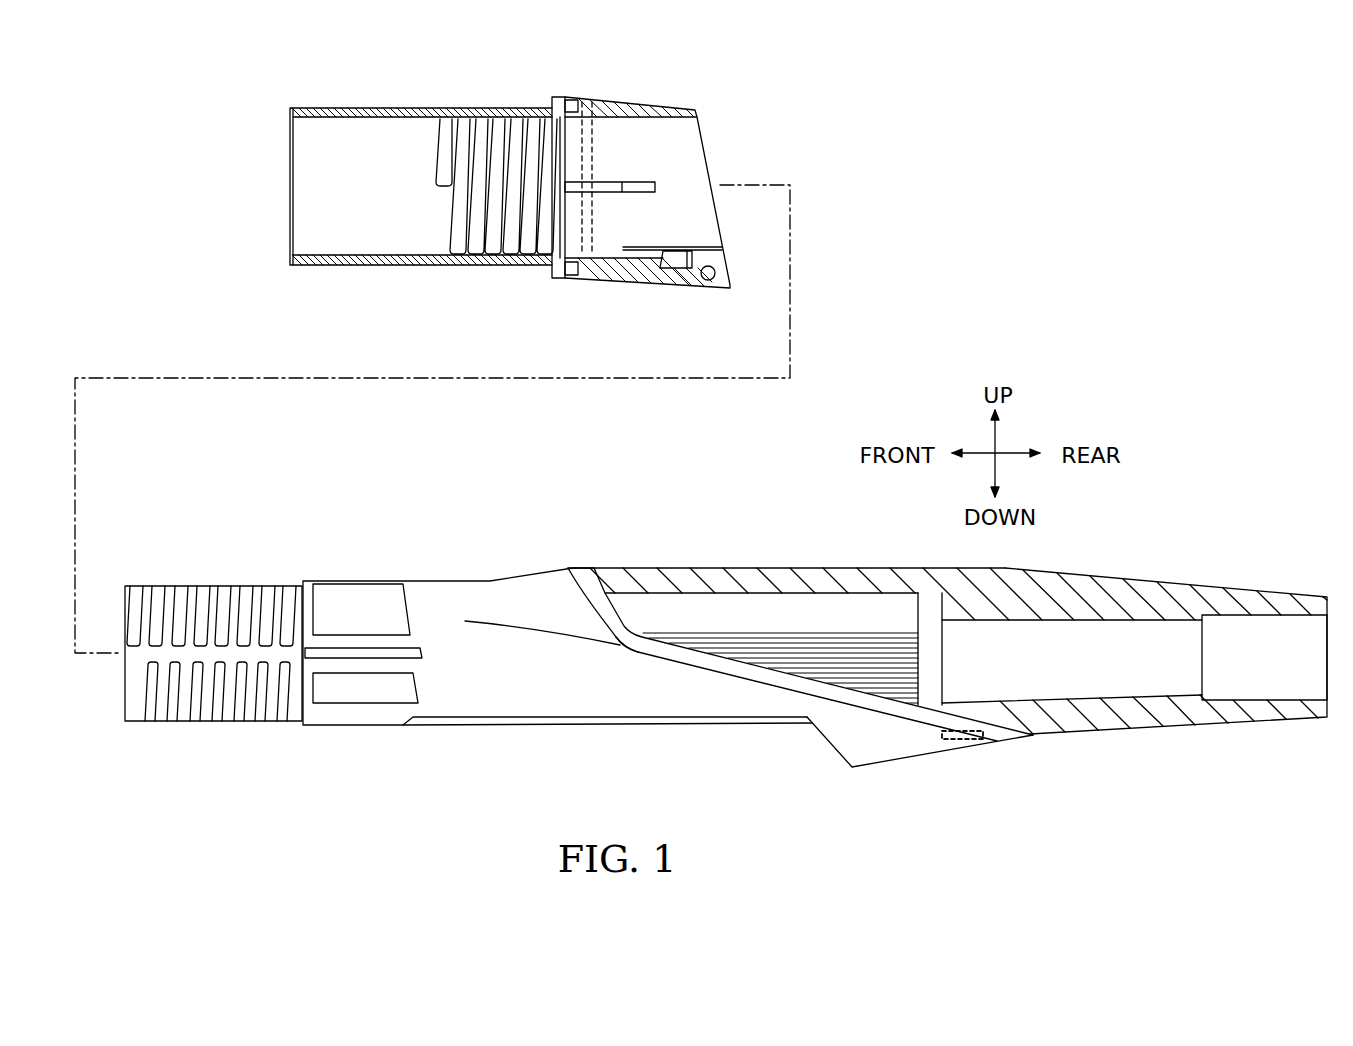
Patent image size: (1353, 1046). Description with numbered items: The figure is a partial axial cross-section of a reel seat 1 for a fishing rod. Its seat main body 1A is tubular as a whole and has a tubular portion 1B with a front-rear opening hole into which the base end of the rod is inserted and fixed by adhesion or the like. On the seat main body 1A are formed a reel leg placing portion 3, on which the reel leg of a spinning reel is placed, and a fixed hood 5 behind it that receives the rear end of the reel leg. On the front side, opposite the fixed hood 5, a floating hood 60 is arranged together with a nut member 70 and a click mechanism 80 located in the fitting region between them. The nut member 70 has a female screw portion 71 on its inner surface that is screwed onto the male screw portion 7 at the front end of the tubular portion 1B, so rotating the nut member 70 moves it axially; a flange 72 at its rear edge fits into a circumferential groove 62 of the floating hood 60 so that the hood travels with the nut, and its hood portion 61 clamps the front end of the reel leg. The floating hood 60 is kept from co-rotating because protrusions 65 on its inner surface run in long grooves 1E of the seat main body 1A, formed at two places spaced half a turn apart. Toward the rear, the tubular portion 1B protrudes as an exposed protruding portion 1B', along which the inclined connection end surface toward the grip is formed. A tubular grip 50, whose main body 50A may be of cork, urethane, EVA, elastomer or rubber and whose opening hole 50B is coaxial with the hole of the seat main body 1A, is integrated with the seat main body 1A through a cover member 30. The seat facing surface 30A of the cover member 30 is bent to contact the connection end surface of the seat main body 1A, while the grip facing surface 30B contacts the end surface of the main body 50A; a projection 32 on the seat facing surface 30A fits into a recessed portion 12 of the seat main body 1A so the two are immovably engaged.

The housing 1 is at (525, 745).
The seat main body 1A is at (423, 600).
The tubular portion 1B is at (361, 569).
The exposed protruding portion 1B' is at (761, 603).
The long grooves 1E is at (353, 653).
The reel leg placing portion 3 is at (610, 720).
The fixed hood 5 is at (898, 745).
The male screw portion 7 is at (203, 586).
The recessed portion 12 is at (962, 742).
The projection 32 is at (962, 735).
The cover member 30 is at (578, 575).
The seat facing surface 30A is at (578, 604).
The grip facing surface 30B is at (622, 617).
The grip 50 is at (1145, 553).
The main body of the grip 50A is at (1068, 592).
The opening hole 50B is at (1290, 615).
The floating hood 60 is at (659, 85).
The hood portion 61 is at (716, 275).
The circumferential groove 62 is at (595, 147).
The protrusions 65 is at (643, 180).
The nut member 70 is at (406, 100).
The female screw portion 71 is at (463, 238).
The flange 72 is at (588, 276).
The click mechanism 80 is at (572, 88).